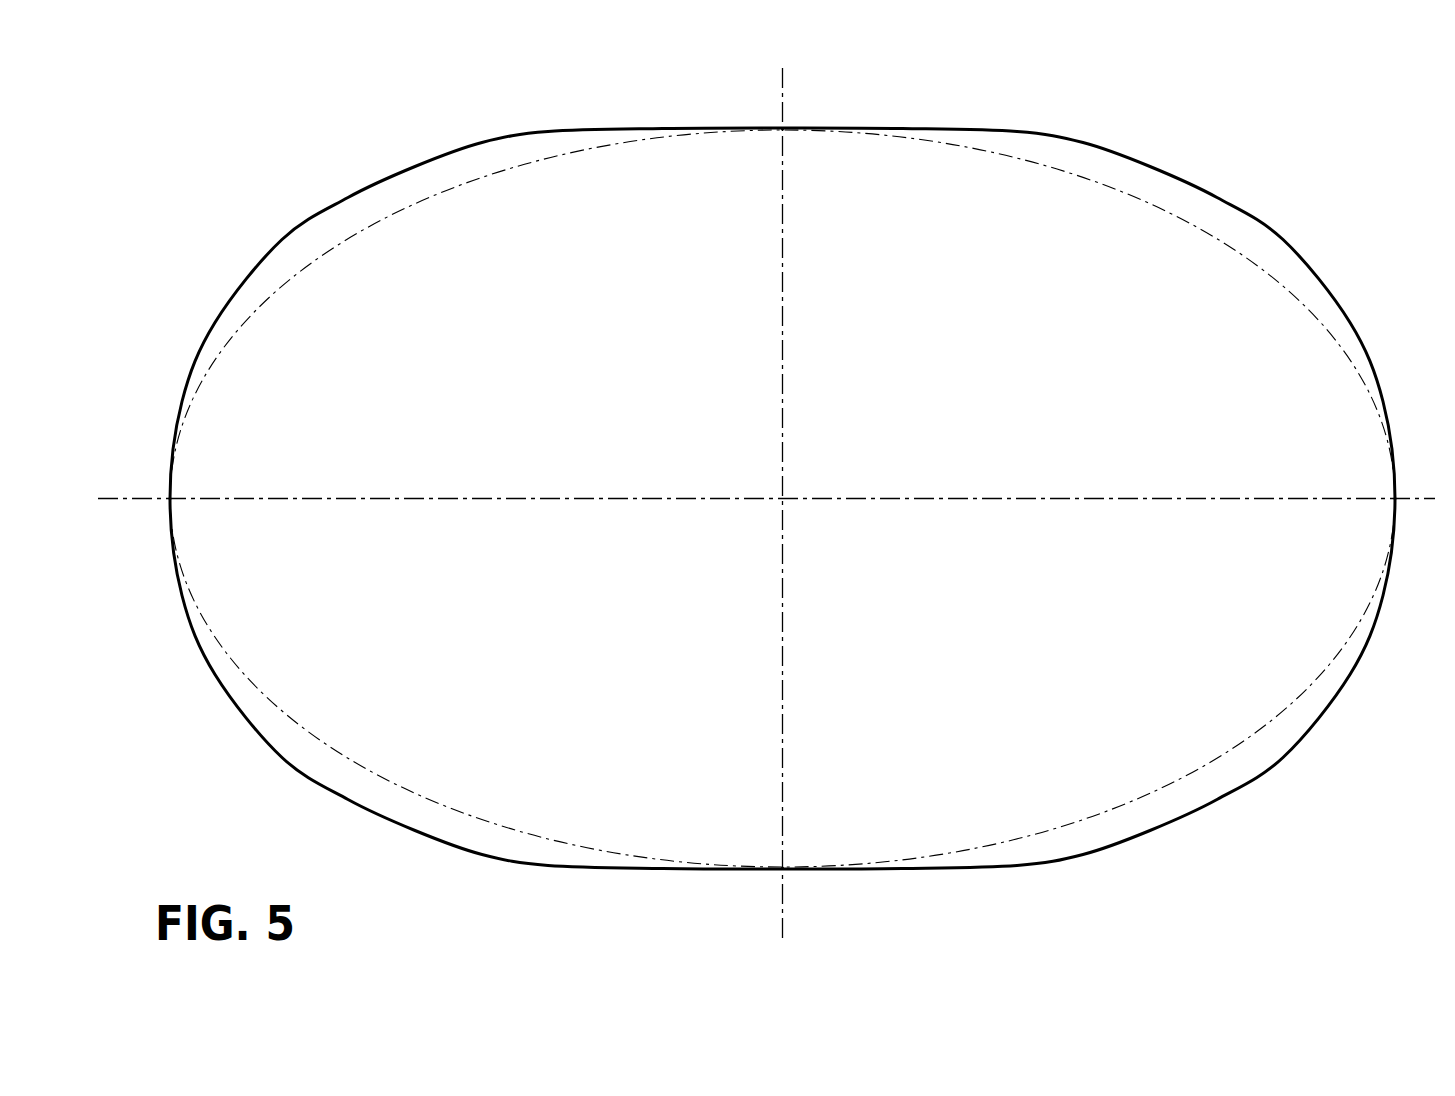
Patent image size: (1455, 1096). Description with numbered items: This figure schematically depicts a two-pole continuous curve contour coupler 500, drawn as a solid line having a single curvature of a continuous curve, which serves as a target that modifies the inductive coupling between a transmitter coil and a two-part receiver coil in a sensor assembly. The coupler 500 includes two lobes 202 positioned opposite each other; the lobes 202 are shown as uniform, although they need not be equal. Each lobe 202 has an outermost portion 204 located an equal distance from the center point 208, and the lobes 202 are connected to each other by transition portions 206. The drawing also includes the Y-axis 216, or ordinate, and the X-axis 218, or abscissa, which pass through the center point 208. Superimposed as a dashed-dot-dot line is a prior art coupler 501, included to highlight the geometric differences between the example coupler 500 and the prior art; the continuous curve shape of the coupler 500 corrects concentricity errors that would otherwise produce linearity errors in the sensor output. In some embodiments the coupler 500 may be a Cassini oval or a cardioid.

The two-pole continuous curve contour coupler 500 is at (215, 91).
The lobes 202 is at (152, 607).
The outermost portions 204 is at (169, 499).
The transition portions 206 is at (783, 130).
The center point 208 is at (784, 497).
The Y-axis 216 is at (784, 110).
The X-axis 218 is at (112, 498).
The prior art coupler 501 is at (292, 720).